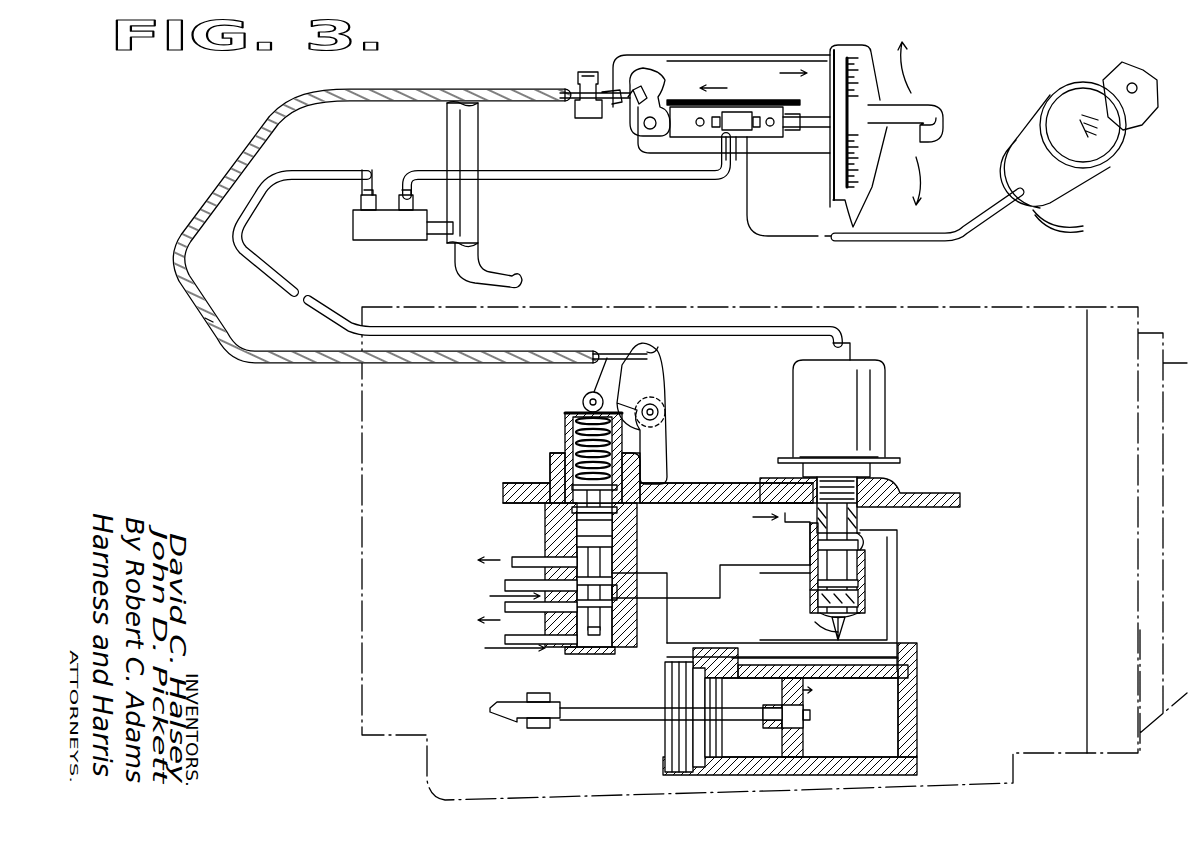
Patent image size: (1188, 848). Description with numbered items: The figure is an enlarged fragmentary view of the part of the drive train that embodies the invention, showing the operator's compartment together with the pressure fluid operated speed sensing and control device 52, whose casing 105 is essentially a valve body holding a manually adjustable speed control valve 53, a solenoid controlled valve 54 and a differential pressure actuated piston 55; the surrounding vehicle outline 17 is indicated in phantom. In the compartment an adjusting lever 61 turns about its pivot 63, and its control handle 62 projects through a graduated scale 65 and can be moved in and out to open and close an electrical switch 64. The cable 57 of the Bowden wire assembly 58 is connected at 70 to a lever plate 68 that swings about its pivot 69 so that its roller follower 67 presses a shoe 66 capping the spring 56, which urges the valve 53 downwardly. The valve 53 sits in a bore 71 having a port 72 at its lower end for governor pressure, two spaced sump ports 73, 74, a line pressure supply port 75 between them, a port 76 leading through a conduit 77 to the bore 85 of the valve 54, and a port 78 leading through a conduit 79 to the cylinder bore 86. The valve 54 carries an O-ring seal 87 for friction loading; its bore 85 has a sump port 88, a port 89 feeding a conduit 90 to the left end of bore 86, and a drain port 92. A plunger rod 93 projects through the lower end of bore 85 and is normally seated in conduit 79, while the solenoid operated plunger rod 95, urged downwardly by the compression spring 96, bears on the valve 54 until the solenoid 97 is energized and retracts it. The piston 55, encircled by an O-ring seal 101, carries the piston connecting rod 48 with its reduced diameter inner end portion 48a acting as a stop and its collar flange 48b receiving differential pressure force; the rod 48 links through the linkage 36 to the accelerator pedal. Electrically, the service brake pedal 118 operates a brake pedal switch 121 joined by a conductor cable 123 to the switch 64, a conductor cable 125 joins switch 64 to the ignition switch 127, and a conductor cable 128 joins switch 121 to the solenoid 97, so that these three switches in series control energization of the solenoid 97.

The engine/vehicle outline 17 is at (965, 312).
The linkage 36 is at (506, 700).
The piston connecting rod 48 is at (628, 722).
The reduced diameter inner end portion 48a is at (808, 720).
The collar flange 48b is at (805, 707).
The speed sensing and control device 52 is at (712, 475).
The manually adjustable speed control valve 53 is at (614, 538).
The solenoid controlled valve 54 is at (820, 560).
The differential pressure actuated piston 55 is at (812, 690).
The spring 56 is at (573, 432).
The cable 57 is at (607, 356).
The Bowden wire assembly 58 is at (500, 100).
The adjusting lever 61 is at (642, 75).
The control handle 62 is at (943, 114).
The pivot 63 is at (646, 125).
The electrical switch 64 is at (750, 140).
The graduated scale 65 is at (835, 47).
The shoe 66 is at (565, 415).
The roller follower 67 is at (583, 397).
The lever plate 68 is at (668, 363).
The pivot 69 is at (658, 408).
The cable connection 70 is at (660, 352).
The bore 71 is at (615, 553).
The port 72 is at (578, 648).
The sump port 73 is at (548, 612).
The sump port 74 is at (565, 560).
The line pressure supply port 75 is at (560, 584).
The port 76 is at (618, 605).
The conduit 77 is at (728, 575).
The port 78 is at (620, 570).
The conduit 79 is at (712, 640).
The bore 85 is at (856, 577).
The cylinder bore 86 is at (887, 758).
The O-ring seal 87 is at (817, 597).
The sump port 88 is at (756, 537).
The port 89 is at (871, 552).
The conduit 90 is at (897, 595).
The port 92 is at (852, 625).
The plunger rod 93 is at (827, 621).
The solenoid operated plunger rod 95 is at (858, 523).
The compression spring 96 is at (872, 478).
The solenoid 97 is at (868, 405).
The O-ring seal 101 is at (805, 750).
The casing 105 is at (935, 498).
The service brake pedal 118 is at (480, 200).
The brake pedal switch 121 is at (432, 245).
The conductor cable 123 is at (636, 178).
The conductor cable 125 is at (870, 242).
The ignition switch 127 is at (1073, 185).
The conductor cable 128 is at (845, 333).